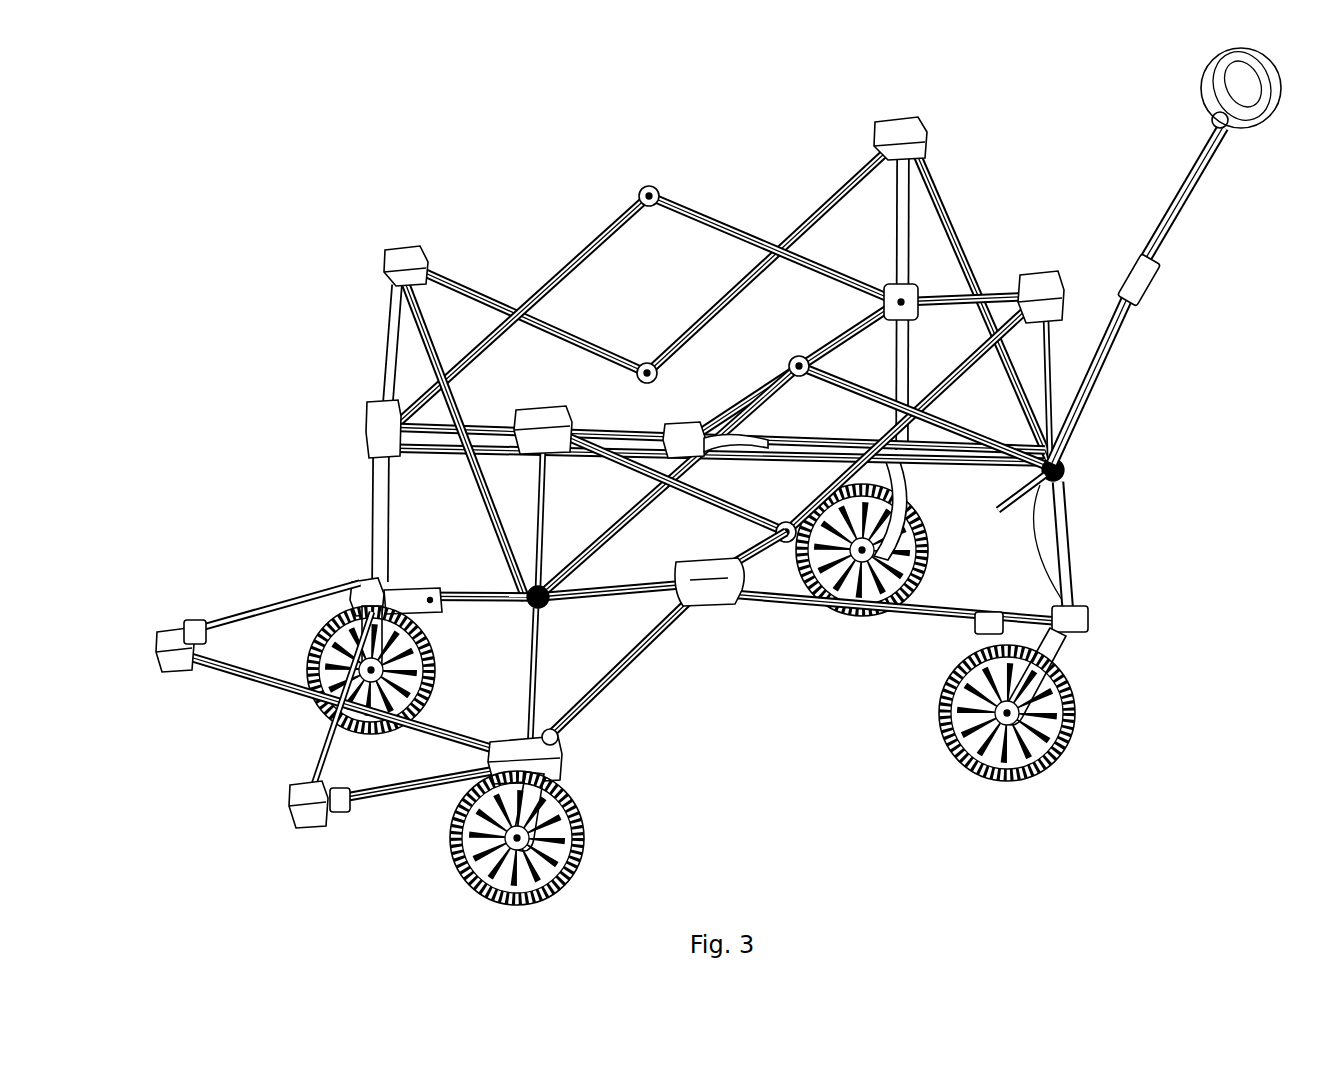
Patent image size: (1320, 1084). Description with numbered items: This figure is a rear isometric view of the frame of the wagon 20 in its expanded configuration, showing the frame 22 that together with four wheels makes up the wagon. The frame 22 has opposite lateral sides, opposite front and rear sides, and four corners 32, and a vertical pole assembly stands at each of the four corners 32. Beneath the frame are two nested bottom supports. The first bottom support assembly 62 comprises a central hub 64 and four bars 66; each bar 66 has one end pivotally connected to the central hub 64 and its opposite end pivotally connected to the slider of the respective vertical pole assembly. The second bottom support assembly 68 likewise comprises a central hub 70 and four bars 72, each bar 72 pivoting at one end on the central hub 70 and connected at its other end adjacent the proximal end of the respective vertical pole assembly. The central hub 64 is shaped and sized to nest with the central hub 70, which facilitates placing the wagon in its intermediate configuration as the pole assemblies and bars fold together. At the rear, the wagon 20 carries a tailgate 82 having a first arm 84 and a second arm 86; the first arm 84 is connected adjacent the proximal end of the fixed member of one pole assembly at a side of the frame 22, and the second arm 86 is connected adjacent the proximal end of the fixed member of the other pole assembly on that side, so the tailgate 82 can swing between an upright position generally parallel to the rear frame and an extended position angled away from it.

The wagon 20 is at (701, 504).
The frame 22 is at (640, 168).
The corners 32 is at (1040, 272).
The first bottom support assembly 62 is at (793, 272).
The central hub 64 is at (668, 456).
The bars 66 is at (718, 331).
The second bottom support assembly 68 is at (686, 640).
The central hub 70 is at (700, 584).
The bars 72 is at (627, 590).
The tailgate 82 is at (326, 749).
The first arm 84 is at (390, 795).
The second arm 86 is at (271, 607).